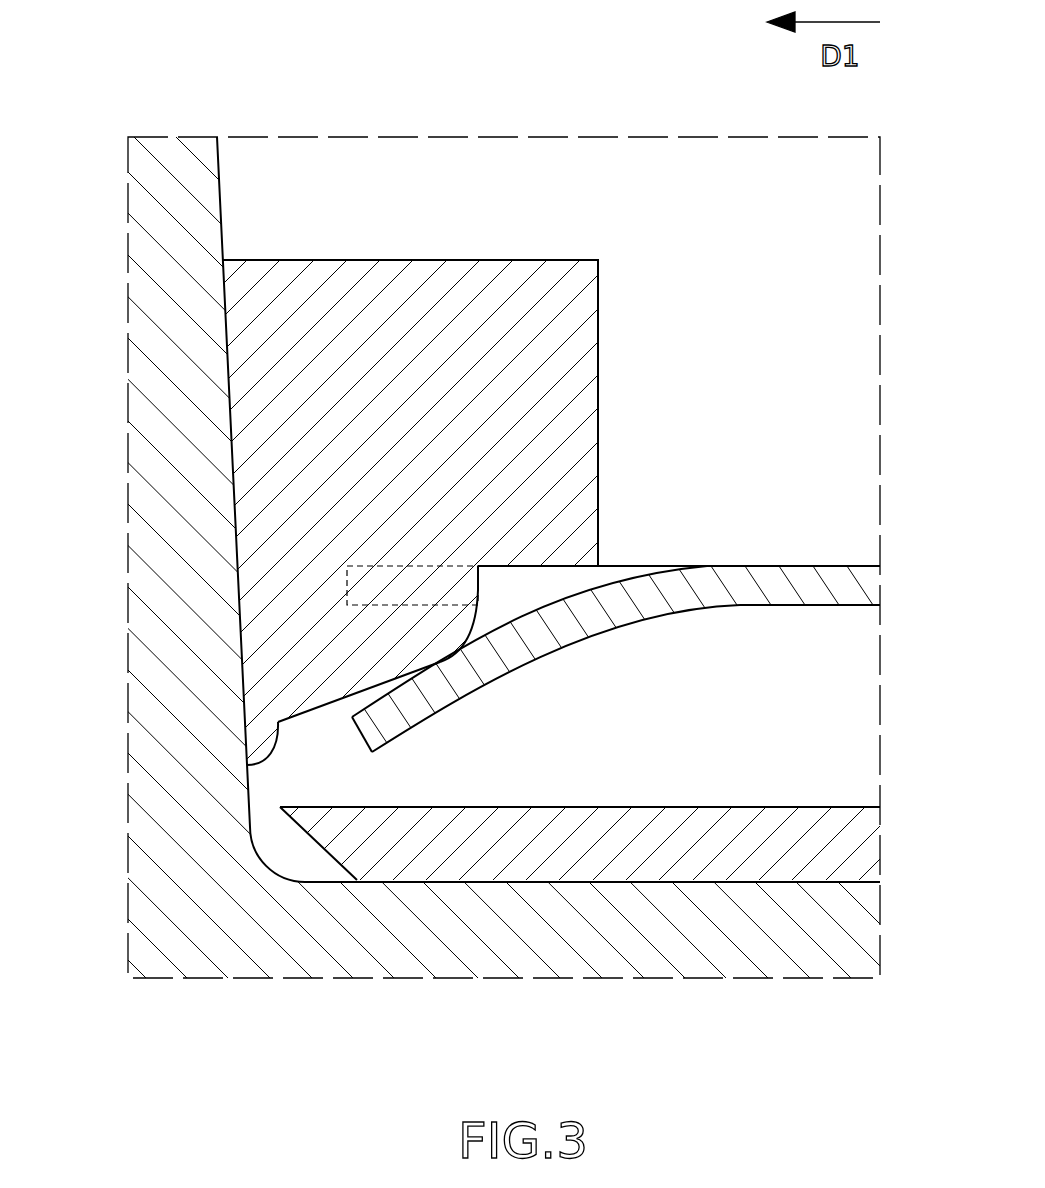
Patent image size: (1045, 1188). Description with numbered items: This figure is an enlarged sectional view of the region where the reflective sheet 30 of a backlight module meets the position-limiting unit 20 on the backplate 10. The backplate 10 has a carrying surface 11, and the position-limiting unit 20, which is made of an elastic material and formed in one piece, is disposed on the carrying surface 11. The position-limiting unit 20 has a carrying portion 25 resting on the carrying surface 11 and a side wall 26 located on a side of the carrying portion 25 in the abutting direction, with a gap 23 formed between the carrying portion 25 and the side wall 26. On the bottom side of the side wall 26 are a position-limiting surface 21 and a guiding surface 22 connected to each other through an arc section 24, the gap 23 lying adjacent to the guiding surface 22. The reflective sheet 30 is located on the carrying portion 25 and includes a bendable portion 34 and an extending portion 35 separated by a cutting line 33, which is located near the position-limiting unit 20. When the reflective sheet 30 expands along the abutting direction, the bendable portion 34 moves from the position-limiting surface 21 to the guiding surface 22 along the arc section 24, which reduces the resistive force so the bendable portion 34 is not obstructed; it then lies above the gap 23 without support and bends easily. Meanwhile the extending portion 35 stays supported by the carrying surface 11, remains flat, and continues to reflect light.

The backplate 10 is at (522, 594).
The carrying surface 11 is at (645, 880).
The position-limiting unit 20 is at (522, 609).
The position-limiting surface 21 is at (478, 588).
The guiding surface 22 is at (247, 765).
The gap 23 is at (348, 784).
The arc section 24 is at (470, 637).
The carrying portion 25 is at (514, 868).
The side wall 26 is at (513, 300).
The reflective sheet 30 is at (603, 617).
The cutting line 33 is at (622, 566).
The bendable portion 34 is at (578, 622).
The extending portion 35 is at (395, 565).